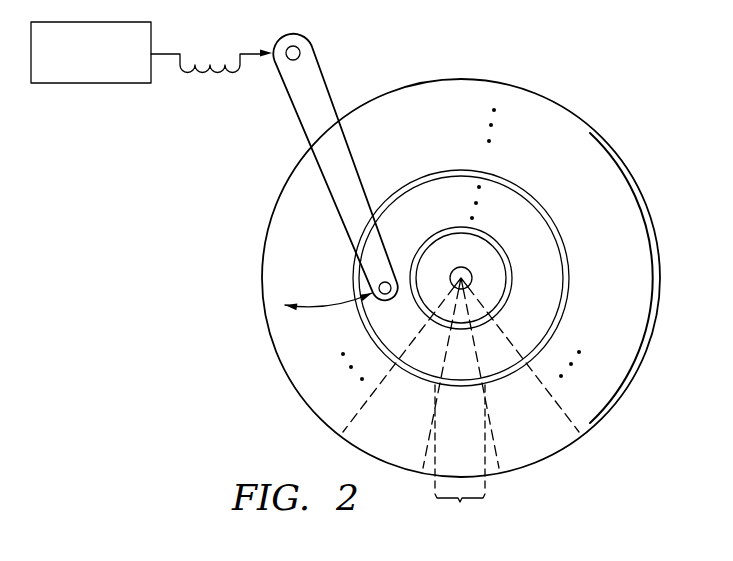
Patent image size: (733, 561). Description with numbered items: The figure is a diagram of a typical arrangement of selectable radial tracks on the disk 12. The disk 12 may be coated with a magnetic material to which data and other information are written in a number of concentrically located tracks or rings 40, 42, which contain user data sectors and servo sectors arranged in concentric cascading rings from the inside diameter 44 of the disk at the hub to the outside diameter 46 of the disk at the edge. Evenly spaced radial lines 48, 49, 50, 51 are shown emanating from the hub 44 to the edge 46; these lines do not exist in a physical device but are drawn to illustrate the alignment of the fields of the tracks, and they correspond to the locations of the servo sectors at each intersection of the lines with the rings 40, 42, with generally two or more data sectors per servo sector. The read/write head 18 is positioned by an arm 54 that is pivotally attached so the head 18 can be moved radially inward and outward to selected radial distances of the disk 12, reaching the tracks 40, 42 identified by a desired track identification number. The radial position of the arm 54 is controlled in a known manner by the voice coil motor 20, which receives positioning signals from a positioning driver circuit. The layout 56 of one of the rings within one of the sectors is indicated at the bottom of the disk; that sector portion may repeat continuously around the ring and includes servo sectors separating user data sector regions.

The disk 12 is at (232, 232).
The read/write head 18 is at (390, 296).
The voice coil motor 20 is at (91, 84).
The track 40 is at (508, 257).
The track 42 is at (460, 170).
The inside diameter 44 is at (461, 266).
The outside diameter 46 is at (660, 278).
The radial line 48 is at (358, 412).
The radial line 49 is at (430, 412).
The radial line 50 is at (492, 412).
The radial line 51 is at (563, 410).
The arm 54 is at (340, 117).
The layout 56 is at (465, 383).